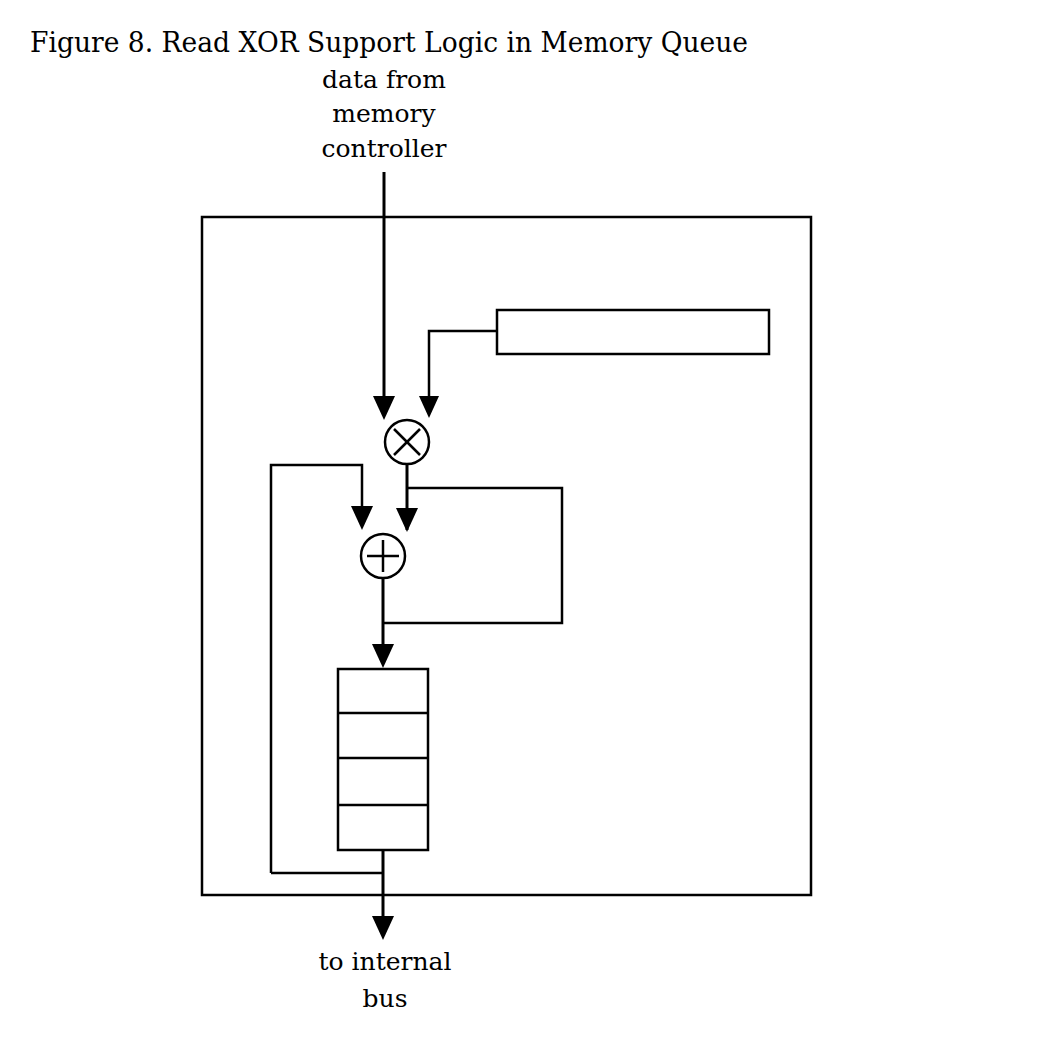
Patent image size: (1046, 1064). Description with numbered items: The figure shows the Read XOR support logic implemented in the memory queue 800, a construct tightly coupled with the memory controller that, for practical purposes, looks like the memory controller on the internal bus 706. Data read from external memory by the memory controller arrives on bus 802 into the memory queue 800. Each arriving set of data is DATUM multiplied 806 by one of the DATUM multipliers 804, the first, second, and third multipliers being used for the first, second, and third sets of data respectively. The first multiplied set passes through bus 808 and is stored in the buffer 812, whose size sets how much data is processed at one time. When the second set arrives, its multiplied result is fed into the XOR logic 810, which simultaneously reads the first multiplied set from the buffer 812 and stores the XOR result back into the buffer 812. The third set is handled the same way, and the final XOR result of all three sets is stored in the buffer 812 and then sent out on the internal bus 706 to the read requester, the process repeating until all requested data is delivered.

The memory queue 800 is at (811, 533).
The bus 802 is at (384, 300).
The DATUM multipliers 804 is at (592, 310).
The DATUM multiplication 806 is at (429, 442).
The bus 808 is at (562, 533).
The XOR logic 810 is at (405, 553).
The buffer 812 is at (428, 735).
The internal bus 706 is at (448, 985).